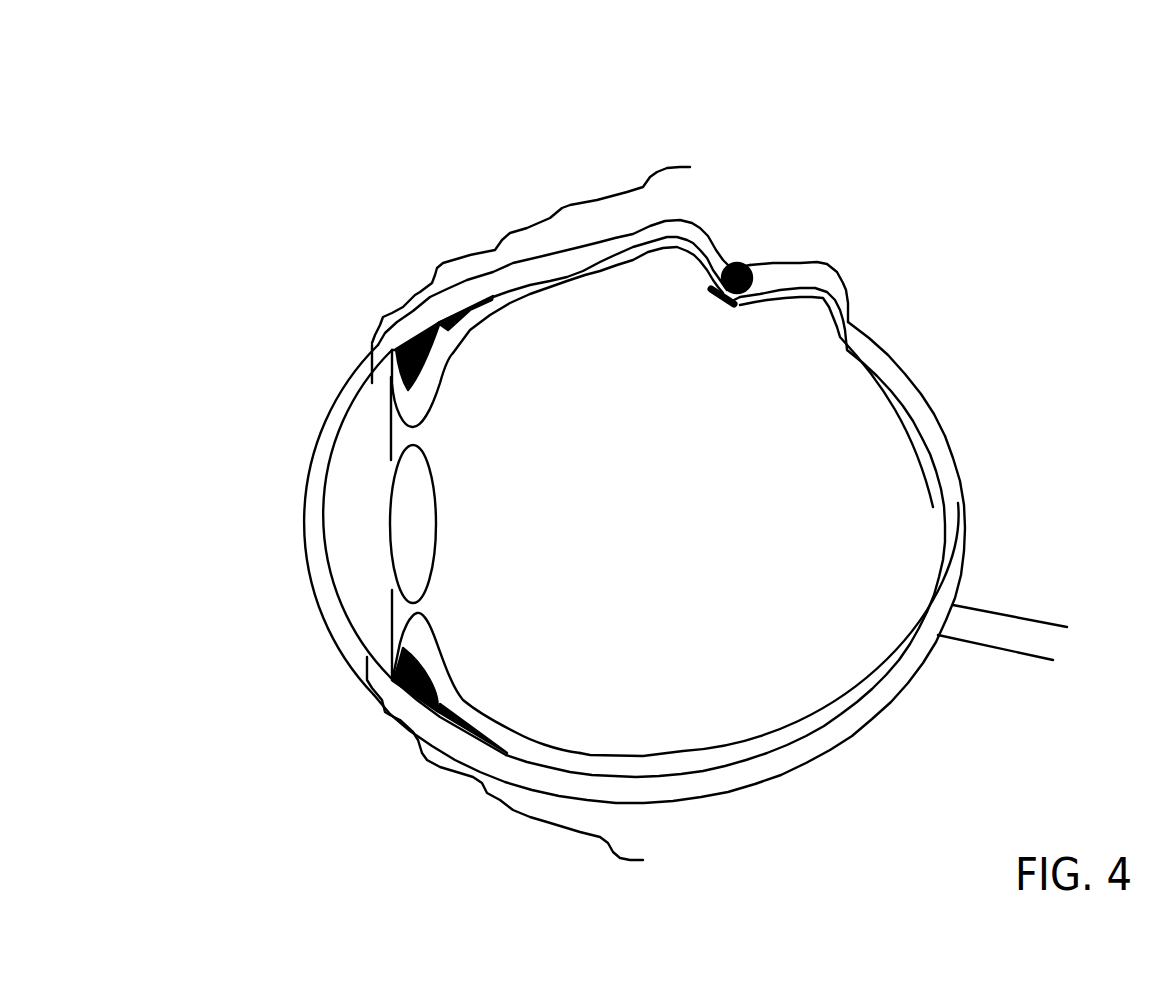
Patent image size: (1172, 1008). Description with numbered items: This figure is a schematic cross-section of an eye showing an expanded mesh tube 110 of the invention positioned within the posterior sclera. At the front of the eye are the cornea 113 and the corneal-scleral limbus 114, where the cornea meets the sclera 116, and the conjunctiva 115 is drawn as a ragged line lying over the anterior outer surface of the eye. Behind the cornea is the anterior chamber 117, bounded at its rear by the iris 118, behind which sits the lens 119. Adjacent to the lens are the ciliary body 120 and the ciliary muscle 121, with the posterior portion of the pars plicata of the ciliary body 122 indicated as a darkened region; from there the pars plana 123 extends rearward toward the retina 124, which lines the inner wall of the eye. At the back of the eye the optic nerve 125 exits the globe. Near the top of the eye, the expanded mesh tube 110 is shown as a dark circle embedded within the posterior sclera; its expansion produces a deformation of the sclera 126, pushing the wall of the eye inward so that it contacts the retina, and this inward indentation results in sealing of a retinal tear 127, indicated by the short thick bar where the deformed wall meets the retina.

The expanded mesh tube 110 is at (738, 246).
The cornea 113 is at (287, 528).
The corneal-scleral limbus 114 is at (360, 369).
The conjunctiva 115 is at (666, 146).
The sclera 116 is at (486, 279).
The anterior chamber 117 is at (360, 435).
The iris 118 is at (378, 613).
The lens 119 is at (452, 528).
The ciliary body 120 is at (444, 418).
The ciliary muscle 121 is at (440, 677).
The posterior portion of the pars plicata of the ciliary body 122 is at (466, 357).
The pars plana 123 is at (500, 316).
The retina 124 is at (917, 490).
The optic nerve 125 is at (1034, 602).
The deformation of the sclera 126 is at (830, 250).
The sealing of a retinal tear 127 is at (720, 320).